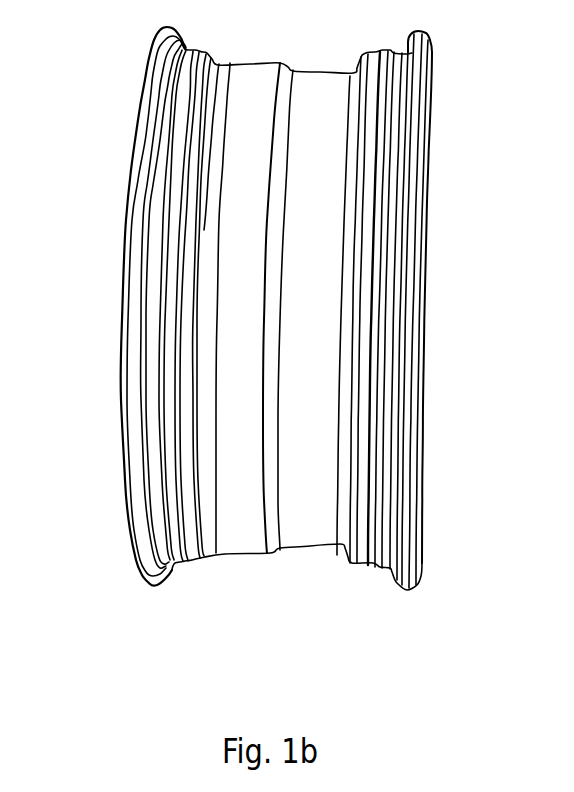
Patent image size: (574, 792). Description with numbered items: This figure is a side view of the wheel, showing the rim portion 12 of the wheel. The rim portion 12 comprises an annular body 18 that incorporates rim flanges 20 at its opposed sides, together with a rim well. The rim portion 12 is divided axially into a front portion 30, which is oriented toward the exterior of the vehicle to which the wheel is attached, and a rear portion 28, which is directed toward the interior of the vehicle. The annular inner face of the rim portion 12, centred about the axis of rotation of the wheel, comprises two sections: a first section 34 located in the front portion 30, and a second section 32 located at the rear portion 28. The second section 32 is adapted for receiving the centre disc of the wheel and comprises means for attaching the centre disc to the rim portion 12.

The rim portion 12 is at (410, 542).
The annular body 18 is at (153, 79).
The rim flanges 20 is at (158, 558).
The rear portion 28 is at (103, 268).
The front portion 30 is at (443, 288).
The second section 32 is at (238, 563).
The first section 34 is at (320, 555).